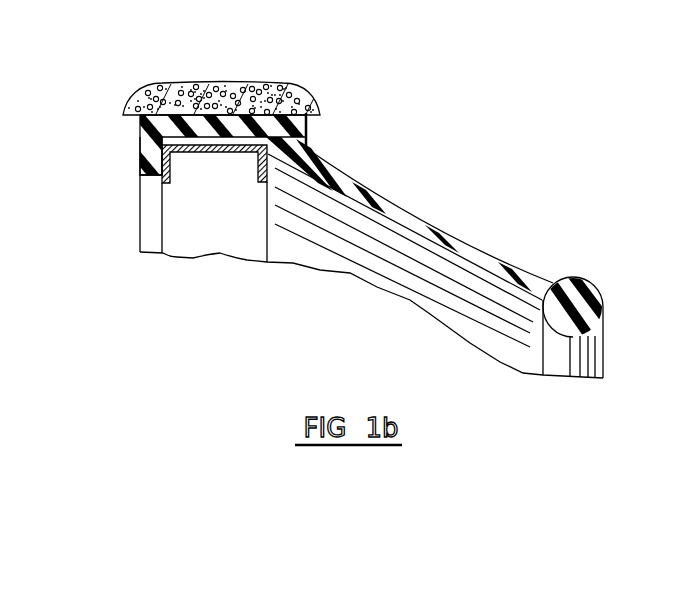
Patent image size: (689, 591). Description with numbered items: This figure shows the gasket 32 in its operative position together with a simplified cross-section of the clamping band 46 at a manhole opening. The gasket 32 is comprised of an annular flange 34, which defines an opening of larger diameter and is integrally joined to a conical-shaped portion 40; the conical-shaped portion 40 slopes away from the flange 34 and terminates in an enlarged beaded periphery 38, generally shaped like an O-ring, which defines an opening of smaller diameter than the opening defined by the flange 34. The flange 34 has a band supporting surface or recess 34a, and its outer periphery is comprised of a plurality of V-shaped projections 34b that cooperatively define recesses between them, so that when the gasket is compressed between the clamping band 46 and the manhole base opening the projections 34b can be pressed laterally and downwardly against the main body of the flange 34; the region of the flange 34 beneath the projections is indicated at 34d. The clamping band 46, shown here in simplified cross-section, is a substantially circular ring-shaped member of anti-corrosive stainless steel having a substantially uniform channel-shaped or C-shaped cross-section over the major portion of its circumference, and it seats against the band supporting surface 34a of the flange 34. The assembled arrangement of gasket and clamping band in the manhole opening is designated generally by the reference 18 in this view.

The squeegee blade assembly 18 is at (308, 122).
The gasket 32 is at (497, 239).
The annular flange 34 is at (180, 151).
The band supporting surface or recess 34a is at (192, 118).
The V-shaped projections 34b is at (214, 122).
The cap lip 34d is at (147, 175).
The enlarged beaded periphery 38 is at (577, 288).
The conical-shaped portion 40 is at (418, 222).
The clamping band 46 is at (213, 152).